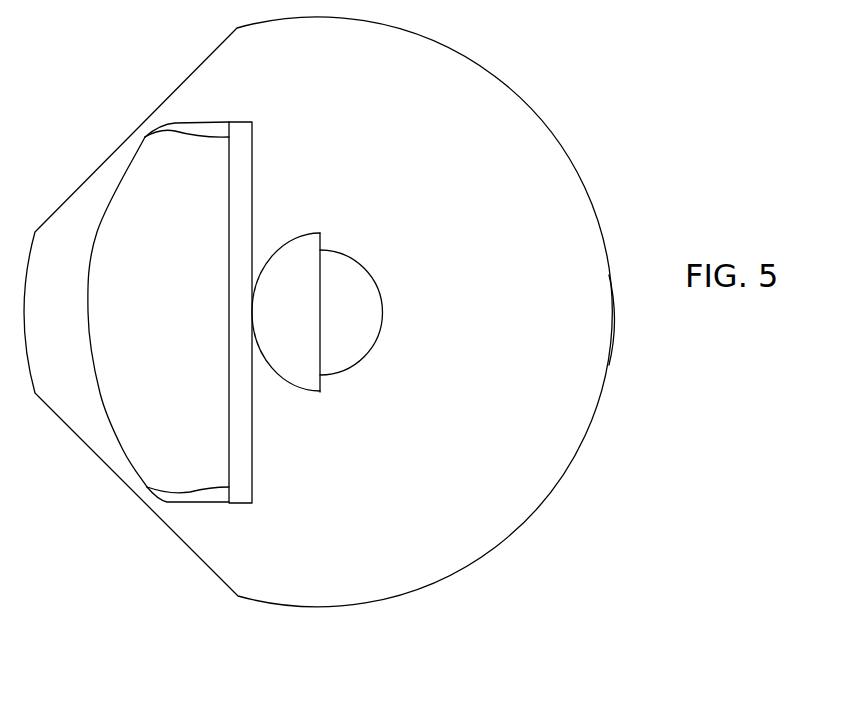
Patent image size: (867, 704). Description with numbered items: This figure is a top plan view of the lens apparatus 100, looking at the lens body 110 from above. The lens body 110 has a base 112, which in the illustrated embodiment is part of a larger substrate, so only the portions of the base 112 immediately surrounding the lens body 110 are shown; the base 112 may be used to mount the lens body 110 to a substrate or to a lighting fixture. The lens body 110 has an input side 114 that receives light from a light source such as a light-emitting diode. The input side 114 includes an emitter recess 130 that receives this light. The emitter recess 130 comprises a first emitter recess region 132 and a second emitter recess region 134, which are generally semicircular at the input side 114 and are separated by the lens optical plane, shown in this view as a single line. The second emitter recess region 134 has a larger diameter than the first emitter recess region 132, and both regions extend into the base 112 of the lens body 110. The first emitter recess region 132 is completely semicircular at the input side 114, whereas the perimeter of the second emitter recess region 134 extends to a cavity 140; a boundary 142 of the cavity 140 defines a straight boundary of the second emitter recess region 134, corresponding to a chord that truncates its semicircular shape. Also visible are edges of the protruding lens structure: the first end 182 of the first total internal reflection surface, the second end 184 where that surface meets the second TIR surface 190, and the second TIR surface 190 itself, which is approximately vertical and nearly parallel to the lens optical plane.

The lens apparatus 100 is at (165, 556).
The lens body 110 is at (305, 587).
The base 112 is at (410, 563).
The input side 114 is at (520, 425).
The emitter recess 130 is at (303, 278).
The first emitter recess region 132 is at (348, 327).
The second emitter recess region 134 is at (283, 357).
The cavity 140 is at (207, 230).
The boundary 142 is at (250, 308).
The first end of first TIR surface 182 is at (252, 448).
The second end of first TIR surface 184 is at (229, 430).
The second TIR surface 190 is at (229, 402).